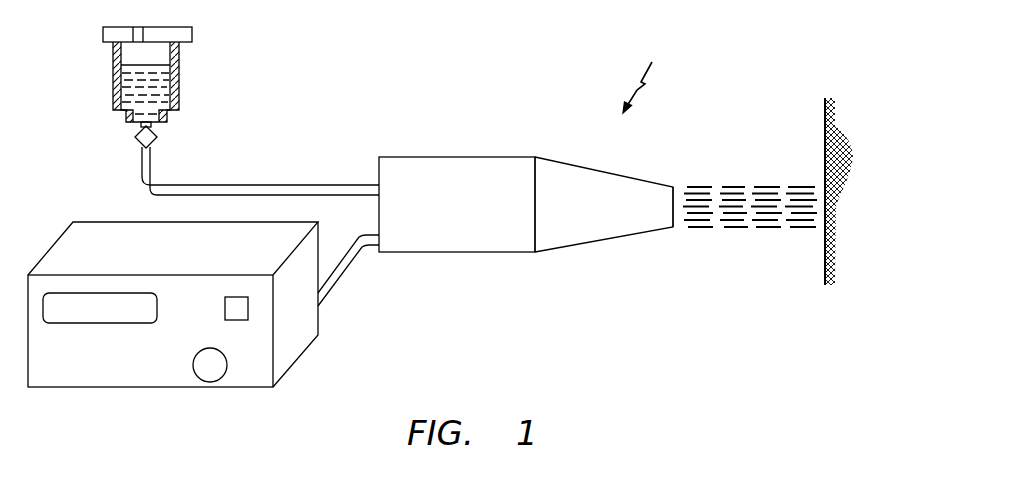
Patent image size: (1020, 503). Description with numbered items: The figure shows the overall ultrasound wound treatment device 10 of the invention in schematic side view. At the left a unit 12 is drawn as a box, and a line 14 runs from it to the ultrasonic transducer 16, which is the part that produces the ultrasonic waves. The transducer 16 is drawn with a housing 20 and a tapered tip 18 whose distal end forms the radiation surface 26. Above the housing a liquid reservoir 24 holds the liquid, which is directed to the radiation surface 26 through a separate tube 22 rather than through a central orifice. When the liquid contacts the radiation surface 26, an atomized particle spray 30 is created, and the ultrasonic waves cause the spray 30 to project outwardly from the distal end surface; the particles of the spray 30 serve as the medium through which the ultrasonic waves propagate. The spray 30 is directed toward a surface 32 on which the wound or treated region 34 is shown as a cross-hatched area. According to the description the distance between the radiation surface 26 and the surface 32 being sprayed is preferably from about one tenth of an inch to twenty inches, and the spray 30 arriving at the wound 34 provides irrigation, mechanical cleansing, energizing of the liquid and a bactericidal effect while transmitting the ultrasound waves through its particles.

The spray system 10 is at (647, 75).
The power supply / controller 12 is at (318, 318).
The electrical cable 14 is at (333, 265).
The spray device 16 is at (536, 157).
The nozzle 18 is at (576, 198).
The spray device housing 20 is at (407, 167).
The fluid supply tube 22 is at (259, 192).
The fluid reservoir / syringe 24 is at (163, 87).
The nozzle outlet 26 is at (683, 192).
The spray of fluid 30 is at (732, 200).
The substrate 32 is at (823, 128).
The coating 34 is at (845, 148).